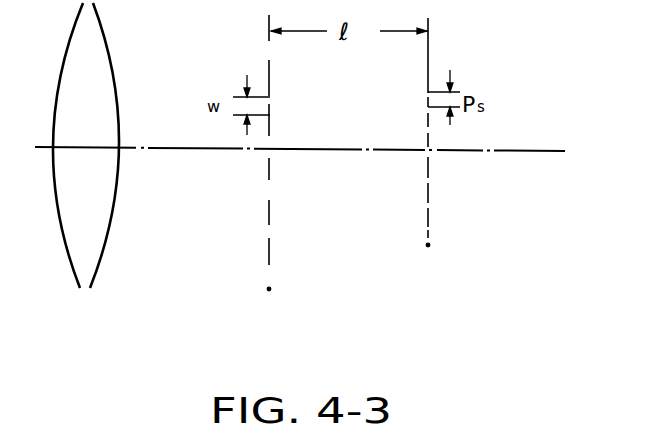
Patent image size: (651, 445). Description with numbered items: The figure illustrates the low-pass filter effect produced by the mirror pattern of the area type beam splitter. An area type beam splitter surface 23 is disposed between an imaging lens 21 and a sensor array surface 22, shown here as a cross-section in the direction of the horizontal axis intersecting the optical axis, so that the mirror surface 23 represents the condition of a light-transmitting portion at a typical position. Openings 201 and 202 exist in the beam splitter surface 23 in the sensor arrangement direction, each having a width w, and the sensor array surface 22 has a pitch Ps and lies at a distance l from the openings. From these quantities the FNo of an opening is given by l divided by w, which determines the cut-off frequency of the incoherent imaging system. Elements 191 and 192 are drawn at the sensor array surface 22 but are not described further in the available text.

The imaging lens 21 is at (97, 40).
The opening 201 is at (271, 56).
The opening 202 is at (271, 105).
The area type beam splitter surface 23 is at (269, 292).
The grating first element 191 is at (429, 80).
The grating second element 192 is at (429, 92).
The sensor array surface 22 is at (428, 248).